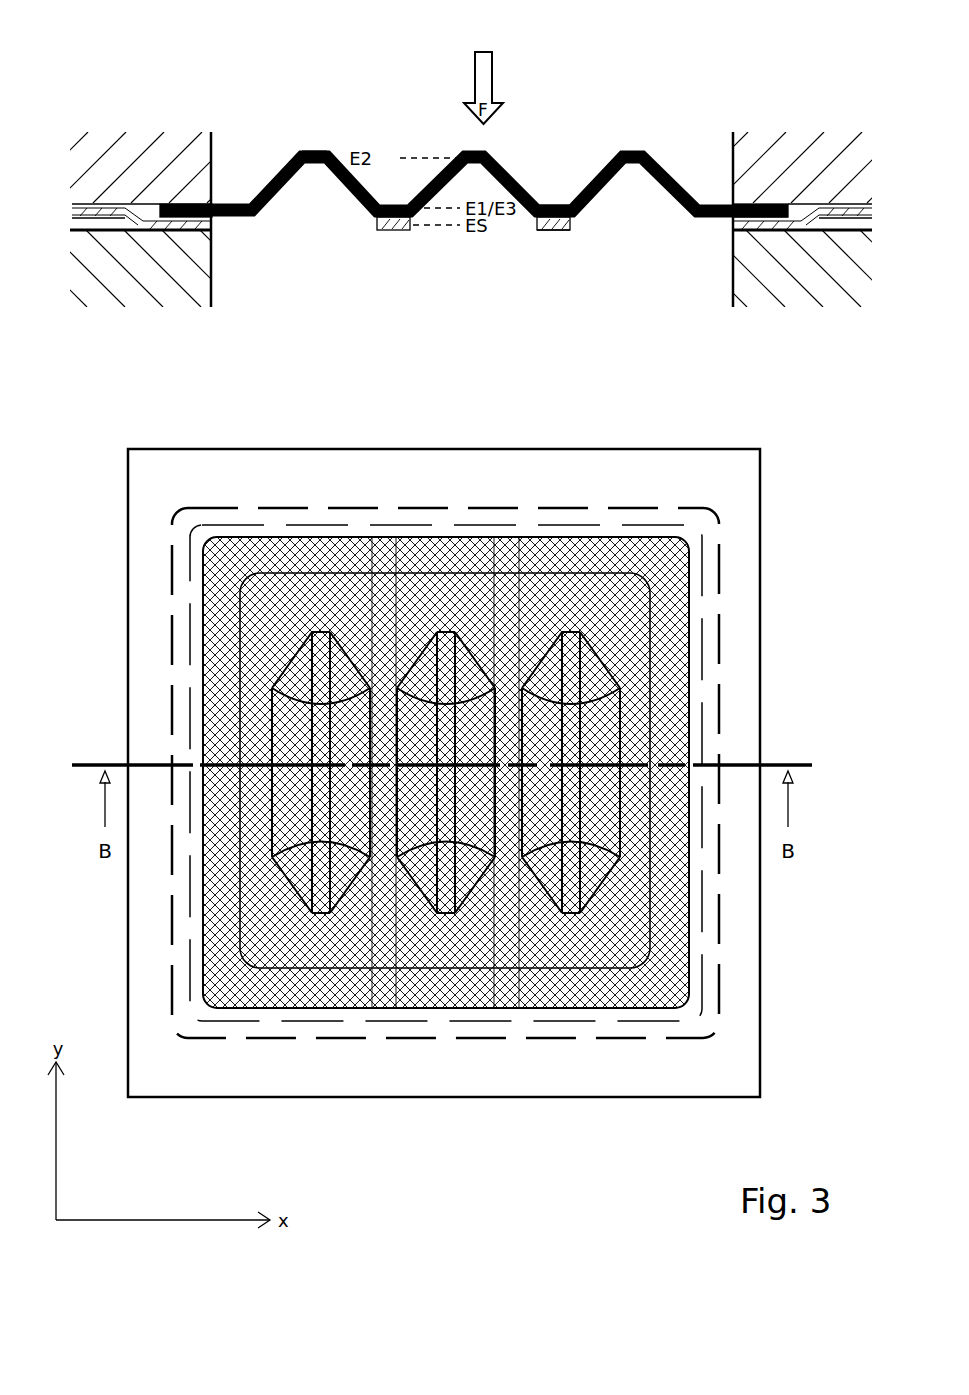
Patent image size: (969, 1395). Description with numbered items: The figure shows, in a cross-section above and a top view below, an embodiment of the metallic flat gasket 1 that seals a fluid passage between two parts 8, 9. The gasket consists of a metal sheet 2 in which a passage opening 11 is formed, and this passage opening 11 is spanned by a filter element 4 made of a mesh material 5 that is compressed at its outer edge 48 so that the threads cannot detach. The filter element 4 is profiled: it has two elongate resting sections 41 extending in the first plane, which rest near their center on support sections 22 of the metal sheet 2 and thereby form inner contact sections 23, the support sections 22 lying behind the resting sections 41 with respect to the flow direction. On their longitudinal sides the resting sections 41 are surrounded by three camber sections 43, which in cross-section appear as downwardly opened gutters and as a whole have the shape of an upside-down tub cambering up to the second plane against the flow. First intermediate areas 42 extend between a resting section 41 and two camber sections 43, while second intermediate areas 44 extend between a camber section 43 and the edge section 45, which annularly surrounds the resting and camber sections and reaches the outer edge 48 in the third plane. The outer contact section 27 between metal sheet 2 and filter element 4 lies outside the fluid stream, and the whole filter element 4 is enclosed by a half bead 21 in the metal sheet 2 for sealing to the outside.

The metallic flat gasket 1 is at (82, 243).
The metal sheet 2 is at (837, 218).
The filter element 4 is at (807, 207).
The mesh material 5 is at (678, 187).
The part 8 is at (147, 219).
The part 9 is at (143, 268).
The passage opening 11 is at (641, 225).
The half bead 21 is at (810, 228).
The support section 22 is at (562, 232).
The inner contact section 23 is at (550, 222).
The outer contact section 27 is at (773, 203).
The resting section 41 is at (553, 206).
The first intermediate area 42 is at (363, 207).
The camber section 43 is at (464, 151).
The second intermediate area 44 is at (280, 187).
The edge section 45 is at (170, 227).
The outer edge 48 is at (143, 220).